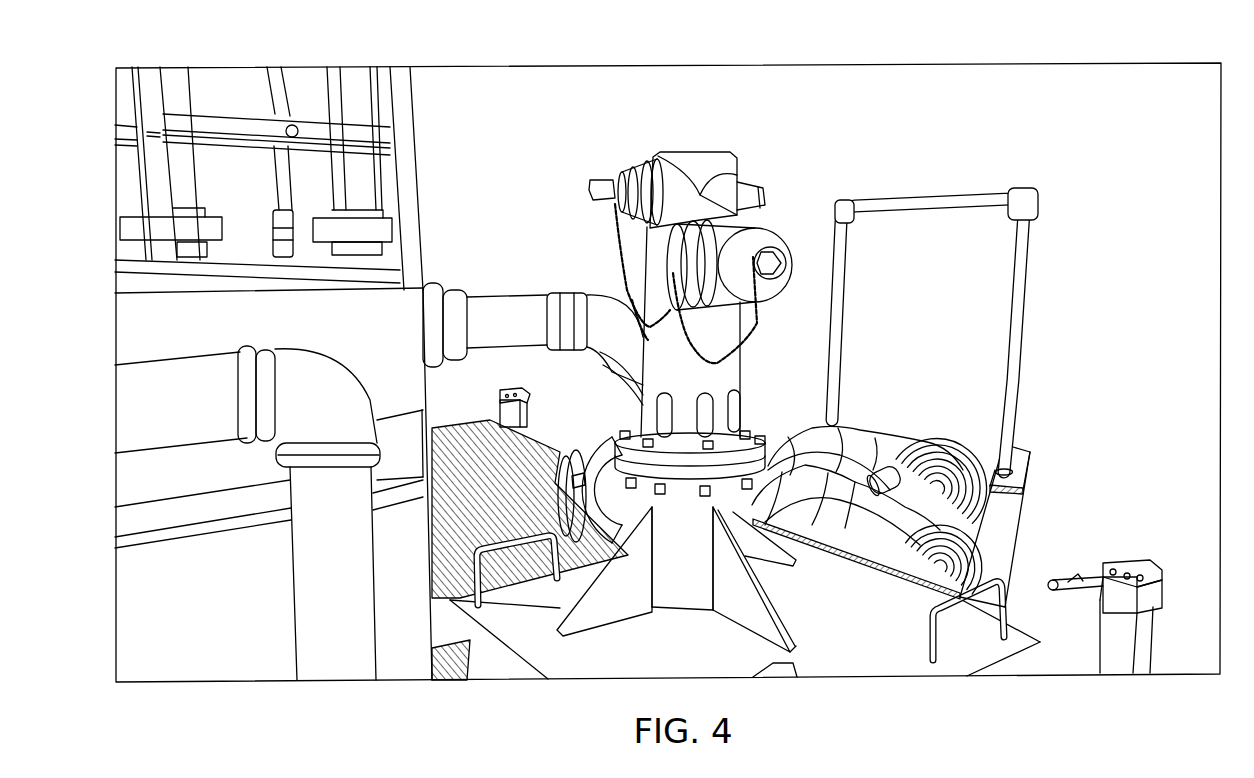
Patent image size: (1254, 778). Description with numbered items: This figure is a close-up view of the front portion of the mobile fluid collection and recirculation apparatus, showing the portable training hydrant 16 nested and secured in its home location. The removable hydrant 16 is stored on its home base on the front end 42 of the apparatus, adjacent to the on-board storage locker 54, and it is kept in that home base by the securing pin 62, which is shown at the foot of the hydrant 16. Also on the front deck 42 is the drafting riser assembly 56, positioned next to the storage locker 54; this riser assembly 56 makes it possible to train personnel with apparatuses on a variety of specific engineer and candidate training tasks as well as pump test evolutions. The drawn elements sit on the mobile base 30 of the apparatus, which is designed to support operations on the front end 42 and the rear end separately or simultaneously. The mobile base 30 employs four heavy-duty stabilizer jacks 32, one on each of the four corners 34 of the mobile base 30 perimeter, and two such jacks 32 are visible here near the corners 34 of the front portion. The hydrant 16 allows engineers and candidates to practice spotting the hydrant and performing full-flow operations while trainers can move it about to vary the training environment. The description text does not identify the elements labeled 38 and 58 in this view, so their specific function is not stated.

The portable training hydrant 16 is at (706, 173).
The mobile base 30 is at (1050, 650).
The stabilizer jack 32 is at (507, 389).
The corner 34 is at (480, 420).
The bracket 38 is at (1000, 463).
The front end 42 is at (1048, 300).
The storage locker 54 is at (385, 322).
The drafting riser assembly 56 is at (343, 78).
The cross beam 58 is at (400, 133).
The securing pin 62 is at (571, 577).